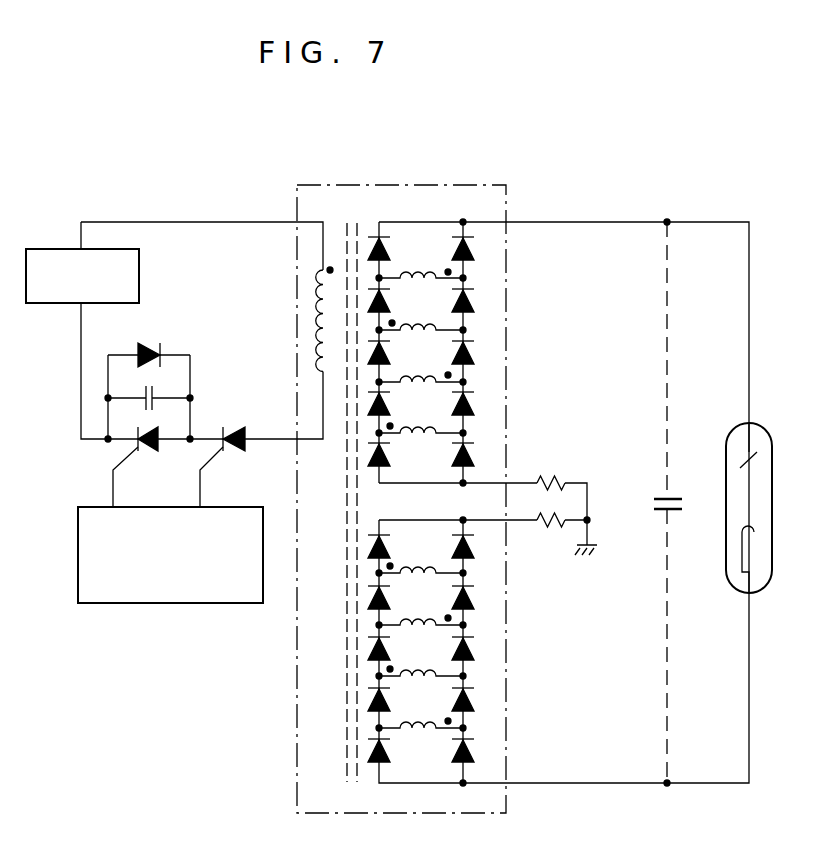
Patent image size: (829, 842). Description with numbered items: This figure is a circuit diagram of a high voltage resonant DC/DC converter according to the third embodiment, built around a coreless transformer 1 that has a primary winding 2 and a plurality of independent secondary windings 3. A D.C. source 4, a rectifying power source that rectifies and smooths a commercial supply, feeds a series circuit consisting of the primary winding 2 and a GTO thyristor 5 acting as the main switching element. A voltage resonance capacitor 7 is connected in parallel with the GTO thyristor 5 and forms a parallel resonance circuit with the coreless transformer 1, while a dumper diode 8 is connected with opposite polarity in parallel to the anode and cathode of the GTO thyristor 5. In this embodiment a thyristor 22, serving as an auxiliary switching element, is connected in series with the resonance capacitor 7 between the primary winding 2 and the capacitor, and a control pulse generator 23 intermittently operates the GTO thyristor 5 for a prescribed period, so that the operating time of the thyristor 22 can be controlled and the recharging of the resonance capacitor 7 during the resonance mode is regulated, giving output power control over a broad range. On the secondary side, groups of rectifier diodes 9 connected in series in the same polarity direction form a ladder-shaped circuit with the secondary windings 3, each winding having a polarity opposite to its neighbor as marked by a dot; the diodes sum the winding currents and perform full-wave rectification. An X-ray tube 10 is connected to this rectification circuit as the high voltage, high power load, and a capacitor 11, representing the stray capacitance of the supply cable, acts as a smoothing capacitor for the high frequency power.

The transformer 1 is at (297, 678).
The primary winding 2 is at (316, 284).
The secondary windings 3 is at (416, 274).
The D.C. source 4 is at (139, 292).
The GTO thyristor 5 is at (127, 447).
The resonance capacitor 7 is at (156, 396).
The dumper diode 8 is at (155, 350).
The rectifier diodes 9 is at (467, 300).
The X-ray tube 10 is at (726, 546).
The capacitor 11 is at (652, 512).
The thyristor 22 is at (218, 436).
The control pulse generator 23 is at (187, 603).